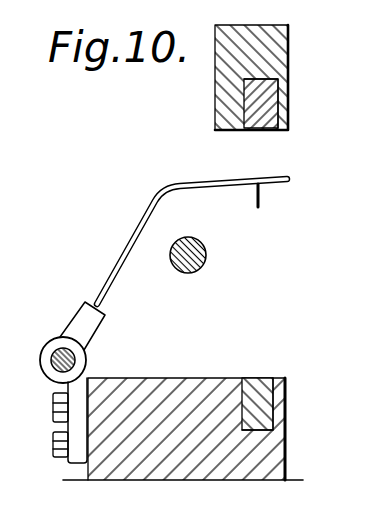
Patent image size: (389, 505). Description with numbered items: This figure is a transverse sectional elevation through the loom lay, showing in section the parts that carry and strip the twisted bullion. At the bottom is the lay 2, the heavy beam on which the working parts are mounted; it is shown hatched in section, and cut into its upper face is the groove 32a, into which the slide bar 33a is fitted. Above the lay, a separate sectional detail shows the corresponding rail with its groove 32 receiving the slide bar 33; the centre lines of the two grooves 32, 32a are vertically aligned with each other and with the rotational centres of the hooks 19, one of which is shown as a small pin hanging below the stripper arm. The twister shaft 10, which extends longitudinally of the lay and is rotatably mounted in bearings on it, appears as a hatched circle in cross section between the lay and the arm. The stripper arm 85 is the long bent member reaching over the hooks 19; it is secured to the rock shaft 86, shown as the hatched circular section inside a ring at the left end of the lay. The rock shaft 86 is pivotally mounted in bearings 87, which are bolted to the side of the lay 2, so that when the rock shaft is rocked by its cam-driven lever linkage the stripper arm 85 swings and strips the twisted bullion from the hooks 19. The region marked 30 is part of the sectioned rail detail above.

The lay 2 is at (165, 378).
The twister shaft 10 is at (206, 256).
The hook 19 is at (261, 195).
The hard block 30 is at (270, 45).
The groove 32 is at (268, 75).
The slide bar 33 is at (263, 108).
The slide bar 33a is at (258, 378).
The groove 32a is at (257, 432).
The stripper arm 85 is at (163, 190).
The rock shaft 86 is at (77, 358).
The bearing 87 is at (78, 415).